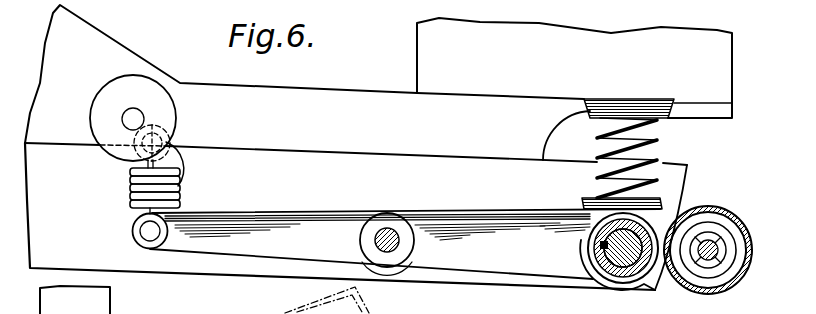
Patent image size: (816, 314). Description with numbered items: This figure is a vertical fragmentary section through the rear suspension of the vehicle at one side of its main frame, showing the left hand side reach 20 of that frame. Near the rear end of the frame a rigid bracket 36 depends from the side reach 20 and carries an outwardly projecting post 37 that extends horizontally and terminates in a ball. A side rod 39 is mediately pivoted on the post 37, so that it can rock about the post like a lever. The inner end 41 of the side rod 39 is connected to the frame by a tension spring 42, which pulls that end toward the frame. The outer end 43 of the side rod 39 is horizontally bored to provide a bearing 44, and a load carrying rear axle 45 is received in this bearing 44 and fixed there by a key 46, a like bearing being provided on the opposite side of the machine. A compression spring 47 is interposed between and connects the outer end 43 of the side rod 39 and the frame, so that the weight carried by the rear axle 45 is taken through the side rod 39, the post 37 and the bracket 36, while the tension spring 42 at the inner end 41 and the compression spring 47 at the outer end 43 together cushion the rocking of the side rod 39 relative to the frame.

The left hand side reach of the main frame 20 is at (310, 97).
The rigid bracket 36 is at (372, 173).
The post 37 is at (400, 240).
The side rod 39 is at (409, 212).
The inner end of side rod 41 is at (188, 237).
The tension spring 42 is at (180, 183).
The outer end of side rod 43 is at (512, 233).
The bearing 44 is at (632, 263).
The rear axle 45 is at (659, 287).
The key 46 is at (600, 245).
The compression spring 47 is at (654, 155).